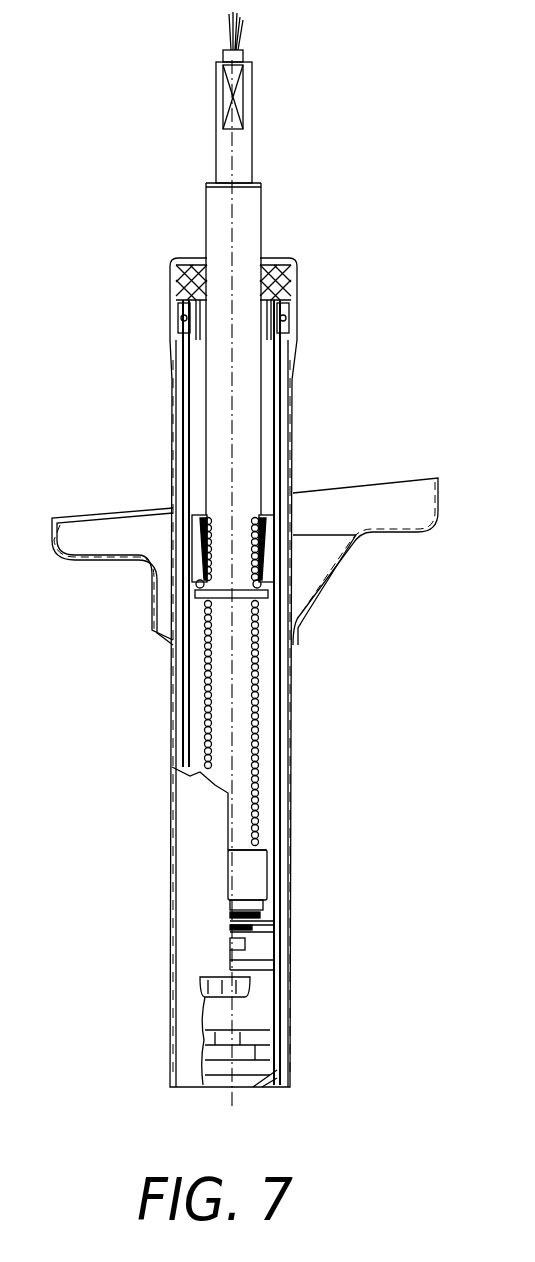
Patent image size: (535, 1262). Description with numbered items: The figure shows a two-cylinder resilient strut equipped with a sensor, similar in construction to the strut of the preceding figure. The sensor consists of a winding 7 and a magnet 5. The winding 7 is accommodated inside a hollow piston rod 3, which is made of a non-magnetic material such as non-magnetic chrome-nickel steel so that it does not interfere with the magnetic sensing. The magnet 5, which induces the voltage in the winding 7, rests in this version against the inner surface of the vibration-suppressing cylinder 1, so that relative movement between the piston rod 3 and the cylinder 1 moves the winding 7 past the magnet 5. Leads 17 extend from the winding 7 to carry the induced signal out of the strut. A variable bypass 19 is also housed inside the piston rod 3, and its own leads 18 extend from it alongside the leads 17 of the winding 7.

The vibration-suppressing cylinder 1 is at (278, 410).
The piston rod 3 is at (258, 468).
The magnet 5 is at (183, 547).
The winding 7 is at (258, 797).
The leads 17 is at (240, 37).
The leads 18 is at (228, 33).
The variable bypass 19 is at (258, 878).